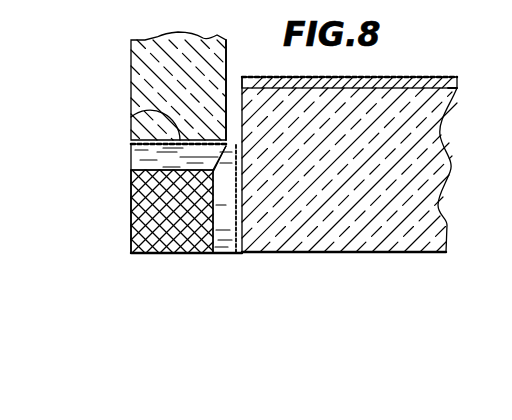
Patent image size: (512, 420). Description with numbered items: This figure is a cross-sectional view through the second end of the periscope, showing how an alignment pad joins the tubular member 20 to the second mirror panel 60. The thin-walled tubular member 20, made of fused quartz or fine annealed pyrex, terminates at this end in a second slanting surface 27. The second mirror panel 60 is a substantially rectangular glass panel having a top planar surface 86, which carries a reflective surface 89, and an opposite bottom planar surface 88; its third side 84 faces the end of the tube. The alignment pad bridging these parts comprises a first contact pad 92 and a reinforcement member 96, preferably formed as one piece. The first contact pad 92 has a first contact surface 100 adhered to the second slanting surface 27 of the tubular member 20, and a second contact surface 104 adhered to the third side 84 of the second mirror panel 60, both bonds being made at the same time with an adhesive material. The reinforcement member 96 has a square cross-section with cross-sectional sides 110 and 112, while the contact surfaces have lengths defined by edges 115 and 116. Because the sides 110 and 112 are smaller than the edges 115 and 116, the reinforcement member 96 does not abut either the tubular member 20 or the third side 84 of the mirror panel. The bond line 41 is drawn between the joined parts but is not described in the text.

The tubular member 20 is at (130, 67).
The third side 84 is at (237, 98).
The reflective surface 89 is at (401, 75).
The top planar surface 86 is at (457, 84).
The second mirror panel 60 is at (458, 164).
The bottom planar surface 88 is at (405, 254).
The second contact surface 104 is at (240, 186).
The bond line 41 is at (131, 145).
The first contact surface 100 is at (186, 132).
The second slanting surface 27 is at (133, 160).
The cross-sectional side 110 is at (131, 199).
The reinforcement member 96 is at (130, 228).
The edge 115 is at (129, 249).
The edge 116 is at (158, 254).
The cross-sectional side 112 is at (181, 256).
The first contact pad 92 is at (228, 255).